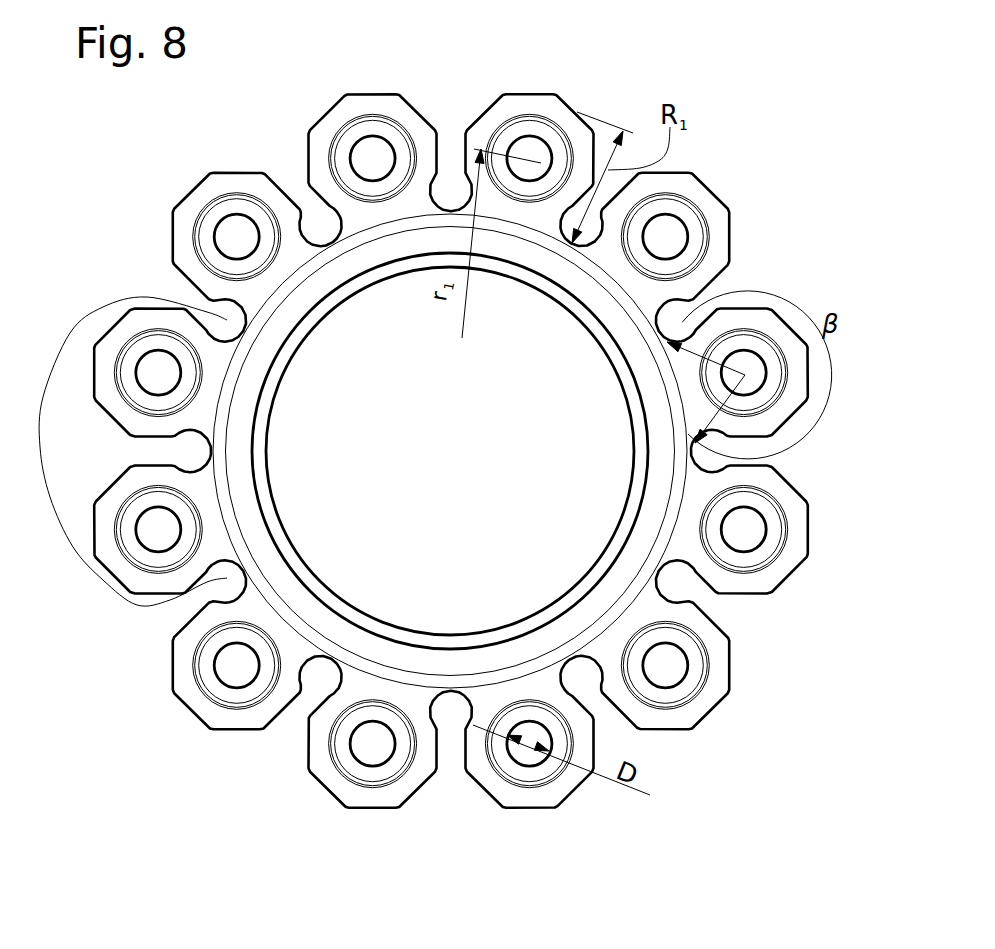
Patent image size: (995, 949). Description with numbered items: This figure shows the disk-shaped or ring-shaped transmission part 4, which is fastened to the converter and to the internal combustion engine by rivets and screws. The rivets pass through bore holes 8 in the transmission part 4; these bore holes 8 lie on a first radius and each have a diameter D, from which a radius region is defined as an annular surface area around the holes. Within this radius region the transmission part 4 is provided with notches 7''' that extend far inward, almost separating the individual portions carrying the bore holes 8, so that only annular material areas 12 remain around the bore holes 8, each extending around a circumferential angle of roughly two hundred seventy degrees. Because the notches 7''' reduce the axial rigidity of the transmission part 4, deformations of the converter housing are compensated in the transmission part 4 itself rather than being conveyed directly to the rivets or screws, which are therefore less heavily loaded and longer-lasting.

The transmission part 4 is at (753, 183).
The bore holes 8 is at (667, 662).
The annular material areas 12 is at (260, 702).
The notches 7''' is at (129, 451).